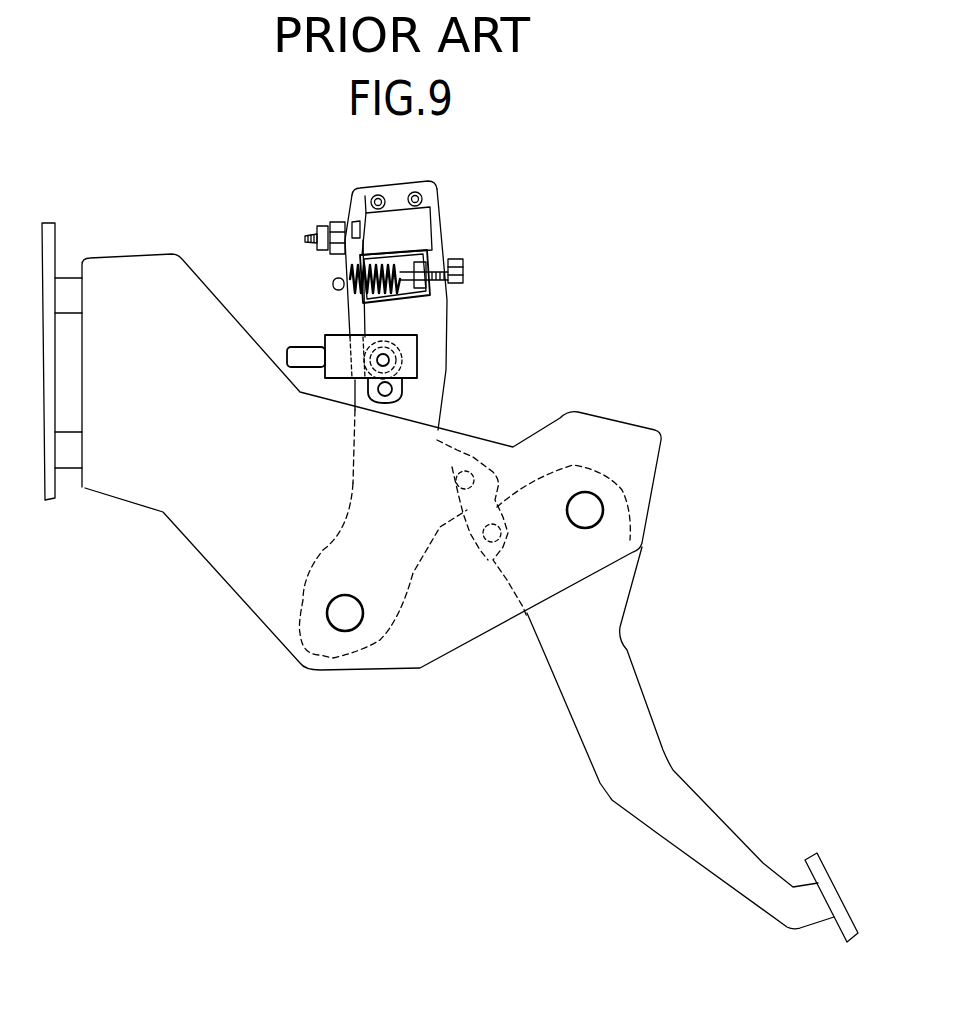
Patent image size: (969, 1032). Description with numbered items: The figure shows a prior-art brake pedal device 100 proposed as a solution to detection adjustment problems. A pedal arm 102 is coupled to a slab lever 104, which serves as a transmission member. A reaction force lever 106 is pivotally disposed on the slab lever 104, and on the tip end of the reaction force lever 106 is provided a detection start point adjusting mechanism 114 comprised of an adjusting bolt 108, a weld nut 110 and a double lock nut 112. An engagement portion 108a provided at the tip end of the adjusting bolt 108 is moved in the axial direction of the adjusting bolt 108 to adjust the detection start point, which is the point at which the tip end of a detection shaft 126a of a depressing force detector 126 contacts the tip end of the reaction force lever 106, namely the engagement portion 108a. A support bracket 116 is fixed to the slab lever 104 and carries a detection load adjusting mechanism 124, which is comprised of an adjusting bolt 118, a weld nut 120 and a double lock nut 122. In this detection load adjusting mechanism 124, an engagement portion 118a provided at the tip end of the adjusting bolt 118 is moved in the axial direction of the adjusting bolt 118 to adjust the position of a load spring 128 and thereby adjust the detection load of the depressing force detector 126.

The brake pedal device 100 is at (180, 213).
The pedal arm 102 is at (588, 712).
The slab lever 104 is at (352, 480).
The reaction force lever 106 is at (352, 320).
The adjusting bolt 108 is at (303, 240).
The engagement portion 108a is at (356, 220).
The weld nut 110 is at (338, 222).
The double lock nut 112 is at (320, 226).
The detection start point adjusting mechanism 114 is at (319, 251).
The support bracket 116 is at (403, 283).
The adjusting bolt 118 is at (466, 265).
The engagement portion 118a is at (415, 285).
The weld nut 120 is at (430, 292).
The double lock nut 122 is at (426, 275).
The detection load adjusting mechanism 124 is at (446, 262).
The depressing force detector 126 is at (410, 213).
The detection shaft 126a is at (375, 233).
The load spring 128 is at (333, 270).